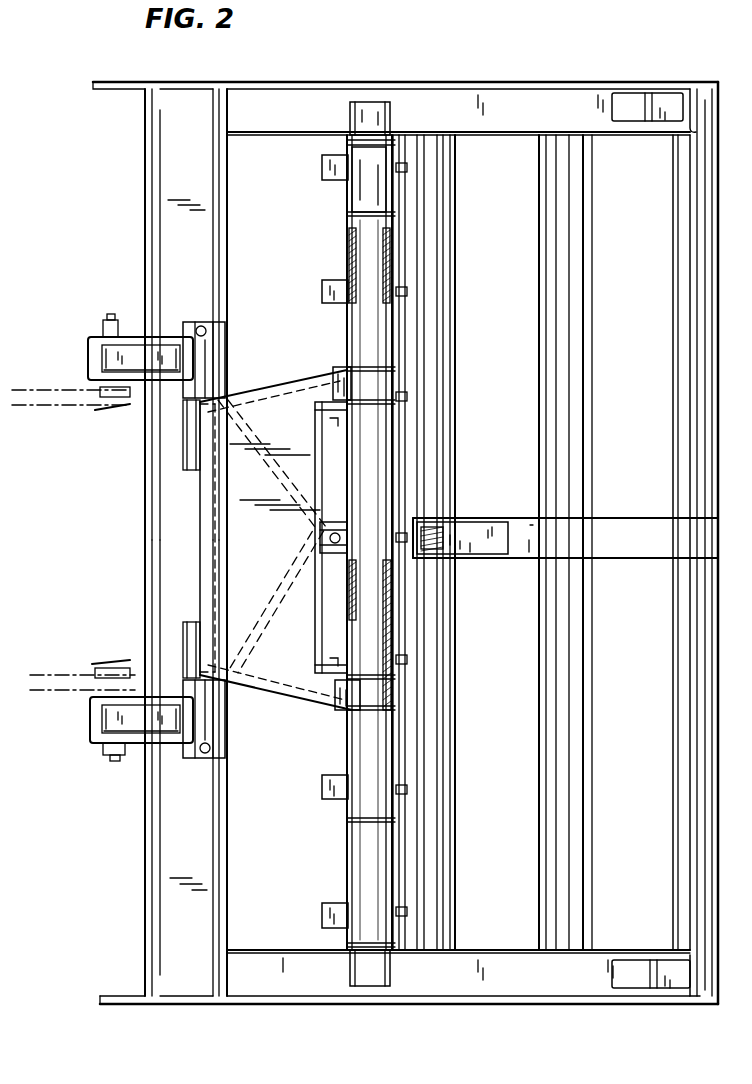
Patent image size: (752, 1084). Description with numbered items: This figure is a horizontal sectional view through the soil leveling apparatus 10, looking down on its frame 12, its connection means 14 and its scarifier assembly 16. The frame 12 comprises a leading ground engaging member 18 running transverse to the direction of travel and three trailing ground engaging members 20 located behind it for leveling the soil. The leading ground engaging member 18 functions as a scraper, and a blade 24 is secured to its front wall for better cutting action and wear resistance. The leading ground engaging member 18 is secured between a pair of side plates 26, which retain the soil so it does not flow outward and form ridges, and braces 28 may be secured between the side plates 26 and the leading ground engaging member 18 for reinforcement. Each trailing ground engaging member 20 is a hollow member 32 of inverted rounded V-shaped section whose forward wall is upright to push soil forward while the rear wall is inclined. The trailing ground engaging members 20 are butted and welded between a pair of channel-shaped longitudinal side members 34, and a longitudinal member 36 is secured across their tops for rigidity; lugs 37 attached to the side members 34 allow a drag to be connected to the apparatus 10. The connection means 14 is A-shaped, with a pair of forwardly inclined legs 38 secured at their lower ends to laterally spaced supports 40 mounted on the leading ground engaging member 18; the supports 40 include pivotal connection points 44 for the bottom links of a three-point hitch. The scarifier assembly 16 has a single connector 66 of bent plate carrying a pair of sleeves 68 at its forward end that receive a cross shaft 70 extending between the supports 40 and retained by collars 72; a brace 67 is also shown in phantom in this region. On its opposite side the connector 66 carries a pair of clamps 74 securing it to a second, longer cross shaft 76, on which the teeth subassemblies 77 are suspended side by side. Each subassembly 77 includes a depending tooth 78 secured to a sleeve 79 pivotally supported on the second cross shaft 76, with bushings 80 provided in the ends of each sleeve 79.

The soil leveling apparatus 10 is at (593, 66).
The frame 12 is at (524, 79).
The connection means 14 is at (102, 547).
The scarifier assembly 16 is at (344, 859).
The leading ground engaging member 18 is at (148, 246).
The trailing ground engaging members 20 is at (454, 470).
The blade 24 is at (148, 890).
The side plates 26 is at (108, 79).
The braces 28 is at (110, 90).
The hollow member 32 is at (440, 432).
The longitudinal side members 34 is at (478, 95).
The longitudinal member 36 is at (618, 542).
The lugs 37 is at (636, 100).
The legs 38 is at (135, 336).
The supports 40 is at (92, 337).
The pivotal connection points 44 is at (112, 410).
The connector 66 is at (279, 686).
The brace (phantom) 67 is at (282, 520).
The sleeves 68 is at (190, 445).
The cross shaft 70 is at (195, 562).
The collars 72 is at (214, 322).
The clamps 74 is at (378, 398).
The second cross shaft 76 is at (376, 102).
The teeth subassemblies 77 is at (356, 196).
The tooth 78 is at (322, 172).
The sleeve 79 is at (392, 200).
The bushings 80 is at (352, 141).